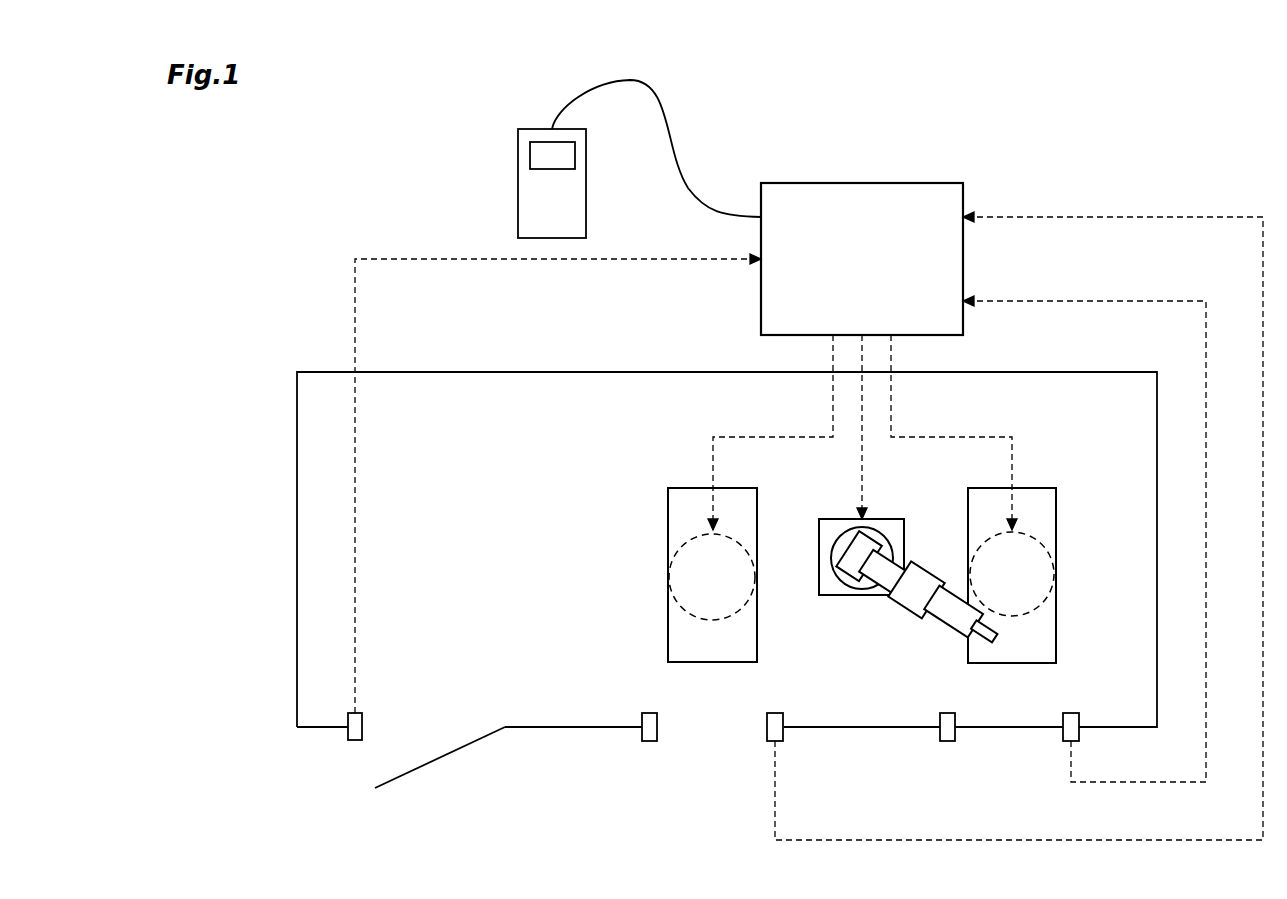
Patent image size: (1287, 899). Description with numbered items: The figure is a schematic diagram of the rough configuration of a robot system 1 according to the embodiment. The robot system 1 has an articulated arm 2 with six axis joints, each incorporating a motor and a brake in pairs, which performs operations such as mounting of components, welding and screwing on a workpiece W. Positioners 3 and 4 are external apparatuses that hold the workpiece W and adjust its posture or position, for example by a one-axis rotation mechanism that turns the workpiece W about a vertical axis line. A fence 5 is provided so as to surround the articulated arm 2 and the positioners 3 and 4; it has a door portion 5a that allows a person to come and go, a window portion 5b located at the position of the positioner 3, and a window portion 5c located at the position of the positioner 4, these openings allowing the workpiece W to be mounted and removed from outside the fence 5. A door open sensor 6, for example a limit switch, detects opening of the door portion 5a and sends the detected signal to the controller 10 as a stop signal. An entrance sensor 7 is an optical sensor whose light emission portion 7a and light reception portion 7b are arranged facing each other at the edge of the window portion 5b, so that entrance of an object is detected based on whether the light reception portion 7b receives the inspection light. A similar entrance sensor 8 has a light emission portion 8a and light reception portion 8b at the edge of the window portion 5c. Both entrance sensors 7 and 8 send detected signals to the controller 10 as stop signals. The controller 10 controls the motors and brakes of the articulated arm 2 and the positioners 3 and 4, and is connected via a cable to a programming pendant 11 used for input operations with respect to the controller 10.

The robot system 1 is at (1028, 108).
The articulated arm 2 is at (843, 596).
The positioner 3 is at (683, 607).
The positioner 4 is at (1043, 608).
The fence 5 is at (297, 655).
The door portion 5a is at (402, 778).
The window portion 5b is at (658, 722).
The window portion 5c is at (956, 722).
The door open sensor 6 is at (347, 733).
The entrance sensor 7 is at (757, 793).
The light emission portion 7a is at (648, 742).
The light reception portion 7b is at (770, 742).
The entrance sensor 8 is at (1055, 793).
The light emission portion 8a is at (945, 742).
The light reception portion 8b is at (1066, 742).
The controller 10 is at (921, 183).
The programming pendant 11 is at (518, 213).
The workpiece W is at (668, 504).